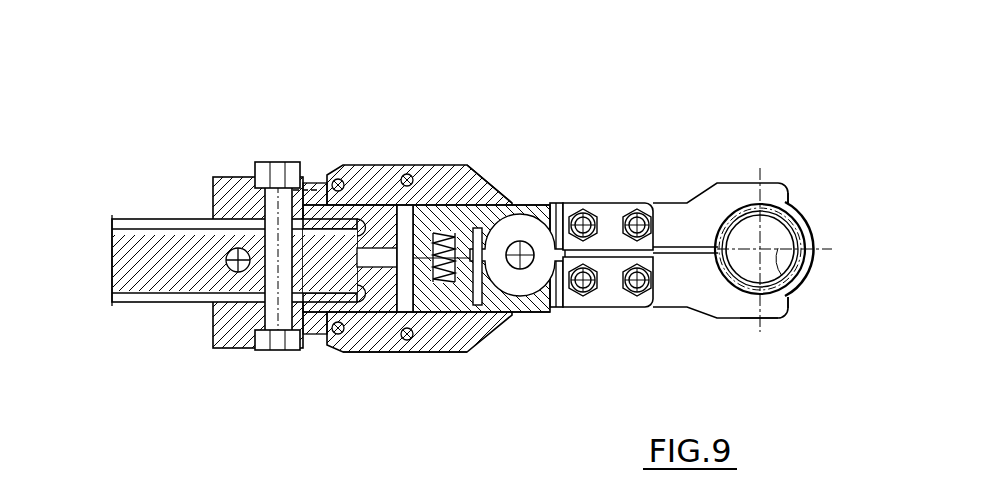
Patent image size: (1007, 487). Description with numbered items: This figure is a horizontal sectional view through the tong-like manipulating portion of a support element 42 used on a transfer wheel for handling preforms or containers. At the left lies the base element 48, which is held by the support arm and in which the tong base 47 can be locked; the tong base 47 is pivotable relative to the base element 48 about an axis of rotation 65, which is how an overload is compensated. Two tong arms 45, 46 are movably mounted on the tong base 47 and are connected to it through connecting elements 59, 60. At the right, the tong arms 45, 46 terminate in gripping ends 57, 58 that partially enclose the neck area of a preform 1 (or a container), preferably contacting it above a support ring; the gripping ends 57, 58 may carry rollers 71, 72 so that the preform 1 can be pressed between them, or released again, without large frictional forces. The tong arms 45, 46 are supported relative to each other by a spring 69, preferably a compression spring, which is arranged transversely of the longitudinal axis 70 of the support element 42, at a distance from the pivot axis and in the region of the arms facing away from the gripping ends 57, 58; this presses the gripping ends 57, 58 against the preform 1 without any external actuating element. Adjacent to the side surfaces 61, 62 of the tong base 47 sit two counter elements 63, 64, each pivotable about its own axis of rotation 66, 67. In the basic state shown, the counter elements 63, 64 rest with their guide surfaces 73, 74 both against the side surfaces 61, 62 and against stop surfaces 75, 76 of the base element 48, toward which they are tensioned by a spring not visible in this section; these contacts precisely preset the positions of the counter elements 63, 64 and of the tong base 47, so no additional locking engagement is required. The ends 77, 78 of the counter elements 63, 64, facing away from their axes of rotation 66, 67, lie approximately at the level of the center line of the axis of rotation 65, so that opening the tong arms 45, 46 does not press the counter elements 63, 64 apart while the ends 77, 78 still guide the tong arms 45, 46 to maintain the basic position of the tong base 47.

The preform 1 is at (810, 228).
The support element 42 is at (445, 122).
The tong arm 45 is at (683, 293).
The tong arm 46 is at (688, 203).
The tong base 47 is at (560, 307).
The base element 48 is at (318, 350).
The gripping end 57 is at (767, 318).
The gripping end 58 is at (770, 187).
The connecting element 59 is at (630, 305).
The connecting element 60 is at (633, 205).
The side surface 61 is at (527, 312).
The side surface 62 is at (528, 205).
The counter element 63 is at (433, 350).
The counter element 64 is at (440, 167).
The axis of rotation 65 is at (522, 252).
The axis of rotation 66 is at (342, 350).
The axis of rotation 67 is at (338, 167).
The spring 69 is at (455, 350).
The longitudinal axis 70 is at (800, 283).
The roller 71 is at (787, 302).
The roller 72 is at (788, 200).
The guide surface 73 is at (420, 350).
The guide surface 74 is at (473, 167).
The stop surface 75 is at (377, 350).
The stop surface 76 is at (385, 167).
The end 77 is at (515, 318).
The end 78 is at (511, 200).